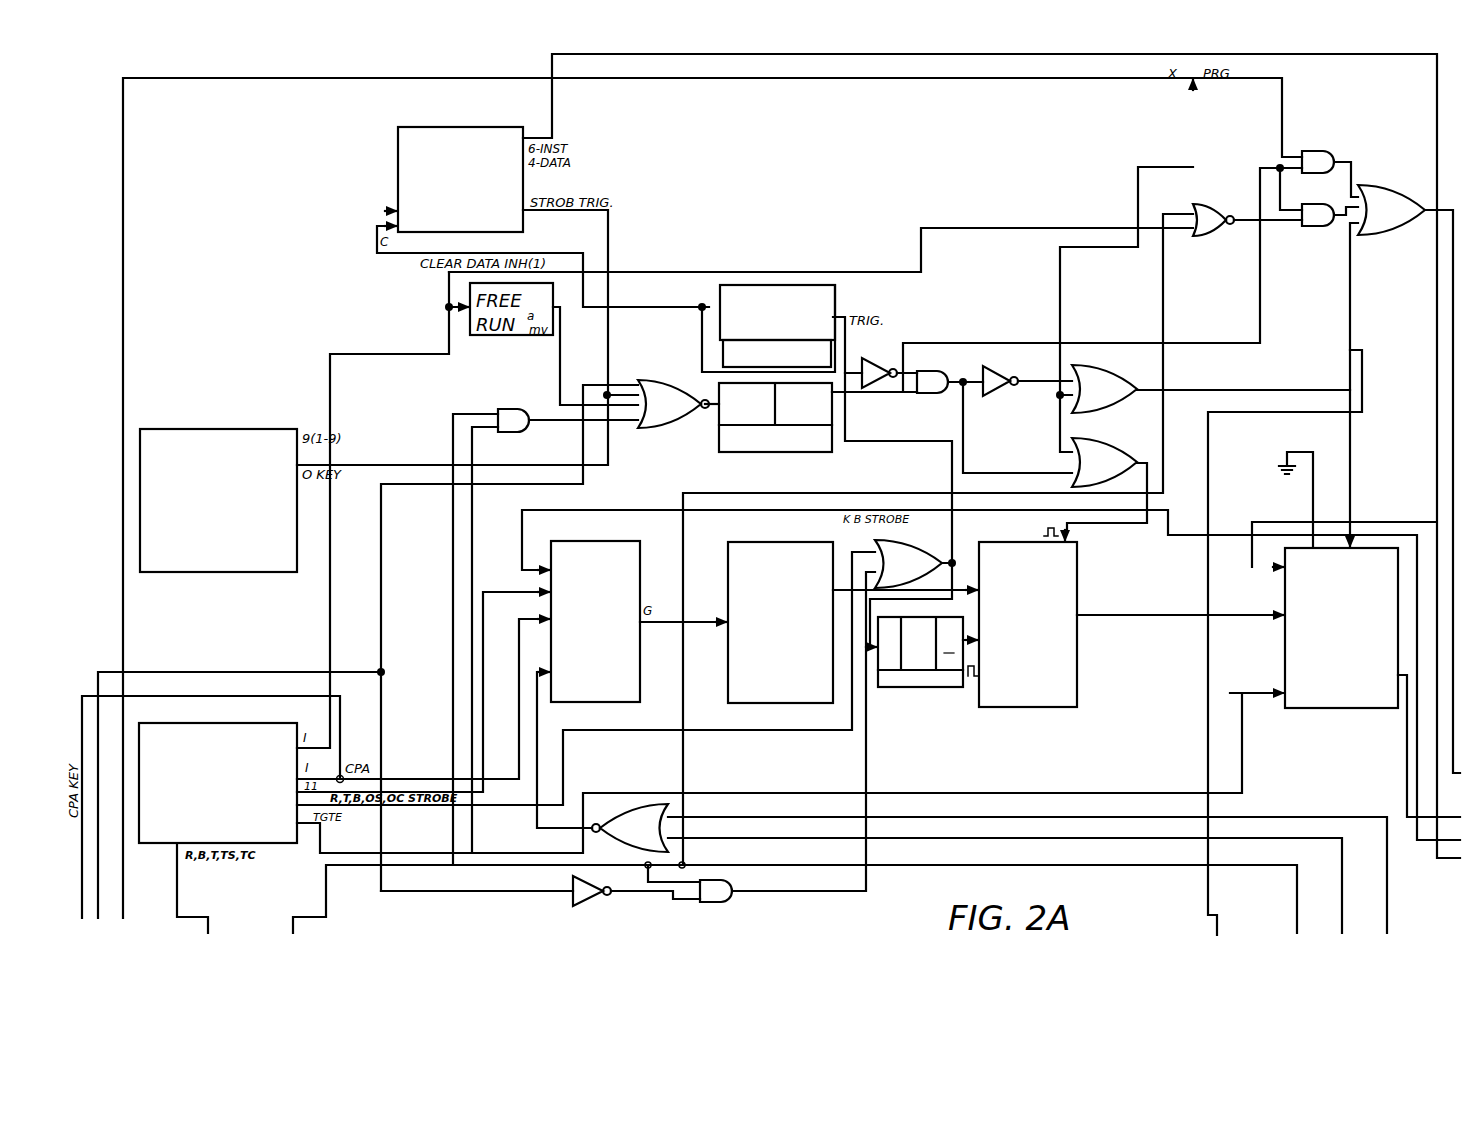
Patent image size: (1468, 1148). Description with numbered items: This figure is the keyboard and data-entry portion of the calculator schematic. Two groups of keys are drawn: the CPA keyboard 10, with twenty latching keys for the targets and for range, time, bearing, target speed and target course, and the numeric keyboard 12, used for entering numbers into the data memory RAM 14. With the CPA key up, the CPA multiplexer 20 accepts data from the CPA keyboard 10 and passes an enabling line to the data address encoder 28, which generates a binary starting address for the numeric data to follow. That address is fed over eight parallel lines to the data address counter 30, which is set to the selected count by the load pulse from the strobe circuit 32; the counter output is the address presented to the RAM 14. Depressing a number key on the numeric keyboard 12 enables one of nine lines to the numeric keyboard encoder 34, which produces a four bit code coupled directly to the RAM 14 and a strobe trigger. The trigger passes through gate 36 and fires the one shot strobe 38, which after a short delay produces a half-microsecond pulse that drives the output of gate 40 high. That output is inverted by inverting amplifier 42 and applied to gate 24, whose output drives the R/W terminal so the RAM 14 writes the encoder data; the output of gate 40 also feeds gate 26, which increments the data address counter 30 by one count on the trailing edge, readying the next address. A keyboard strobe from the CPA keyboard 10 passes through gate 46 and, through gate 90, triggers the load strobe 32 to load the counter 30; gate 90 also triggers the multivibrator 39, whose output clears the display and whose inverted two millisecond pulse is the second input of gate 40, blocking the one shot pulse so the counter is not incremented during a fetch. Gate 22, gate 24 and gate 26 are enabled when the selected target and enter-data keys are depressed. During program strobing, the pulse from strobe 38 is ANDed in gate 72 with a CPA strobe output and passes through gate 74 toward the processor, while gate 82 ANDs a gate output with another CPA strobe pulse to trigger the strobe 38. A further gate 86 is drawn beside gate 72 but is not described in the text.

The CPA keyboard 10 is at (257, 733).
The numeric keyboard 12 is at (252, 432).
The data memory RAM 14 is at (1286, 641).
The CPA multiplexer 20 is at (642, 558).
The gate 22 is at (1216, 234).
The gate 24 is at (1098, 376).
The gate 26 is at (1098, 450).
The data address encoder 28 is at (797, 548).
The data address counter 30 is at (1076, 570).
The strobe circuit 32 is at (940, 687).
The numeric keyboard encoder 34 is at (482, 134).
The gate 36 is at (652, 386).
The one shot strobe 38 is at (720, 436).
The multivibrator 39 is at (824, 307).
The gate 40 is at (940, 378).
The inverting amplifier 42 is at (996, 388).
The gate 46 is at (738, 890).
The gate 72 is at (1322, 154).
The gate 74 is at (1392, 192).
The gate 82 is at (504, 414).
The AND gate 86 is at (1316, 228).
The gate 90 is at (910, 556).